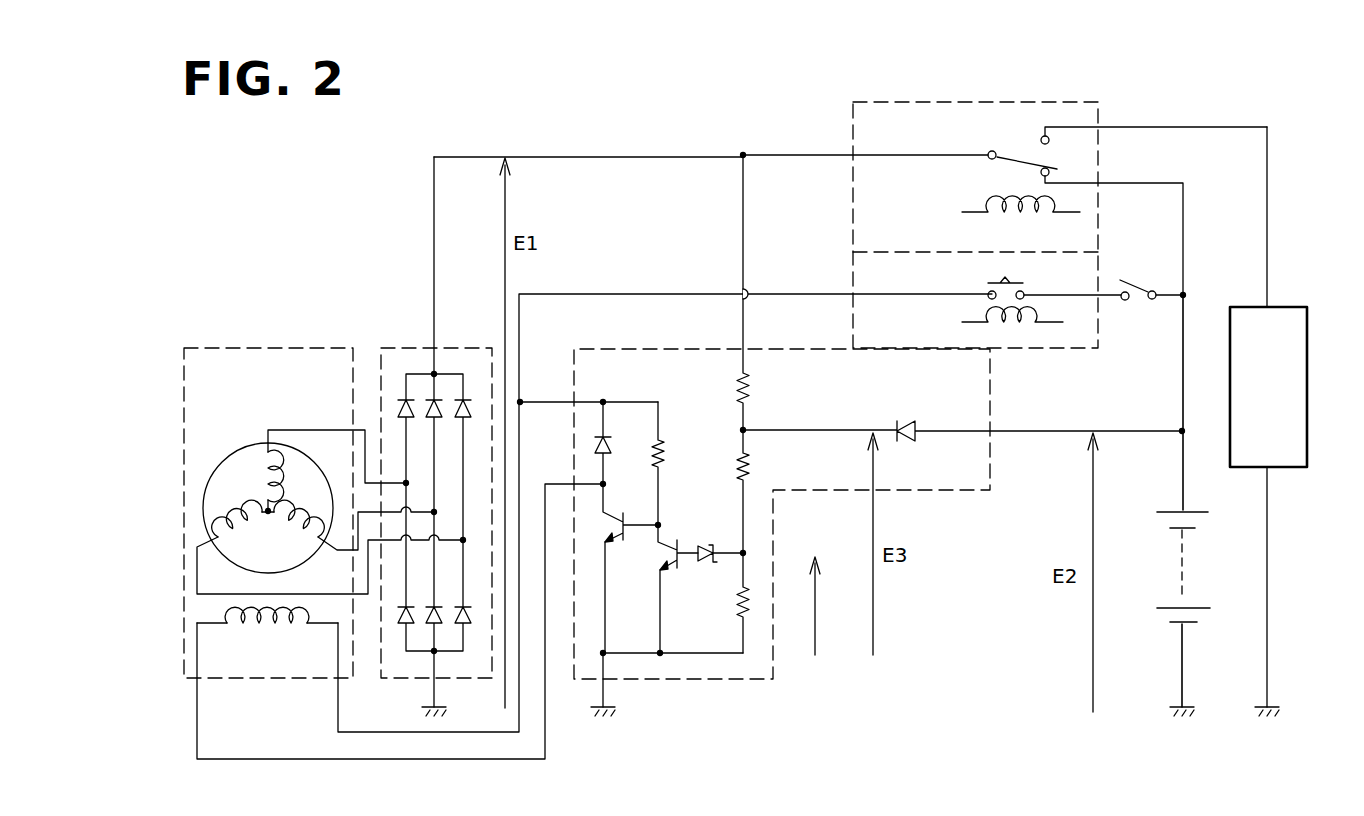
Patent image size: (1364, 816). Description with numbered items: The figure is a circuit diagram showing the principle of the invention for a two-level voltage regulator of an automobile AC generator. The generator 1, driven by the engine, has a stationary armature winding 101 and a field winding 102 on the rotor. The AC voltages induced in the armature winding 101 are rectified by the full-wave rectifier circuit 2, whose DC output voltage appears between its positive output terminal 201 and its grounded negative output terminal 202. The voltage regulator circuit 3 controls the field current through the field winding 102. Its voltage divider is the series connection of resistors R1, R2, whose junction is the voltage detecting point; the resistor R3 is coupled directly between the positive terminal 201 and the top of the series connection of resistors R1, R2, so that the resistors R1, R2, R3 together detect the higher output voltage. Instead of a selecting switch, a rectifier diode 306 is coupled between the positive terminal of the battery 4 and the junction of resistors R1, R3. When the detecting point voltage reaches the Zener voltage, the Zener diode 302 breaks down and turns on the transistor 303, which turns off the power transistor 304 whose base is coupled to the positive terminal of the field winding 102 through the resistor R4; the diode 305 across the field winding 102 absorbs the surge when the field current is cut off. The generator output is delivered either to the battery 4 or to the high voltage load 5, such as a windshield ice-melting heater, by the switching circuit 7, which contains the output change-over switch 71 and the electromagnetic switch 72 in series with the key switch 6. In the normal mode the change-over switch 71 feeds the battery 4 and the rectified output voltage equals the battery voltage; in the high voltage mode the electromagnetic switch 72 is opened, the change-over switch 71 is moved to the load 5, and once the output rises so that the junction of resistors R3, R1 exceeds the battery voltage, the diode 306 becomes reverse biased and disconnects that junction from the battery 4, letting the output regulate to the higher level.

The AC generator 1 is at (258, 348).
The armature winding 101 is at (247, 462).
The field winding 102 is at (268, 632).
The full-wave rectifier circuit 2 is at (442, 348).
The positive output terminal 201 is at (435, 374).
The negative output terminal 202 is at (436, 655).
The voltage regulator circuit 3 is at (655, 349).
The Zener diode 302 is at (703, 565).
The transistor 303 is at (663, 543).
The power transistor 304 is at (612, 542).
The diode 305 is at (612, 445).
The rectifier diode 306 is at (905, 441).
The resistor R1 is at (760, 491).
The resistor R2 is at (752, 600).
The resistor R3 is at (760, 292).
The resistor R4 is at (676, 463).
The battery 4 is at (1175, 567).
The high voltage load 5 is at (1310, 345).
The key switch 6 is at (1142, 302).
The switching circuit 7 is at (852, 117).
The output change-over switch 71 is at (853, 218).
The electromagnetic switch 72 is at (853, 272).